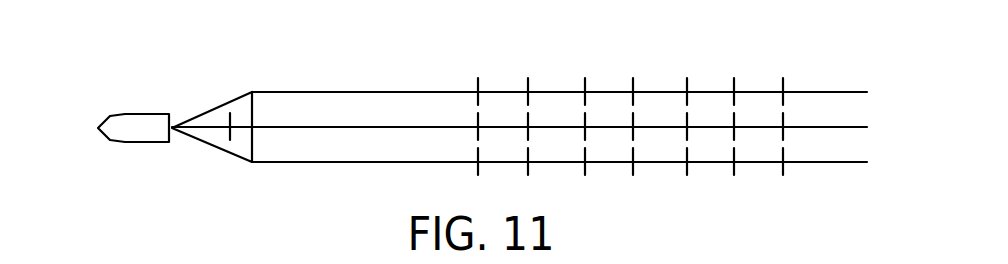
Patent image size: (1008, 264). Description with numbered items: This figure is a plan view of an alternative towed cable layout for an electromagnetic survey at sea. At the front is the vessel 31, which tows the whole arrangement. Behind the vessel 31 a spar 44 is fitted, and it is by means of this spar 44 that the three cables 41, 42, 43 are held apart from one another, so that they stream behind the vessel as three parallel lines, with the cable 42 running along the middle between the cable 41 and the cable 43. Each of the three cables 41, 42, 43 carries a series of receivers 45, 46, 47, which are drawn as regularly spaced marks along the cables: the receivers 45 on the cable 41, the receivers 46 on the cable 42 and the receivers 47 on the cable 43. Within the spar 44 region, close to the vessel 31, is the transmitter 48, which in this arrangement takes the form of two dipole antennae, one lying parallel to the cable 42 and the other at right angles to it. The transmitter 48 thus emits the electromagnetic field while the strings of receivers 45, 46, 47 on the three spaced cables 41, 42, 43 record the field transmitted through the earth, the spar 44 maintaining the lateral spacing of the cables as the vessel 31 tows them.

The vessel 31 is at (140, 143).
The cable 41 is at (305, 91).
The cable 42 is at (378, 125).
The cable 43 is at (383, 164).
The spar 44 is at (253, 152).
The receivers 45 is at (585, 78).
The receivers 46 is at (528, 141).
The receivers 47 is at (687, 173).
The transmitter 48 is at (228, 120).